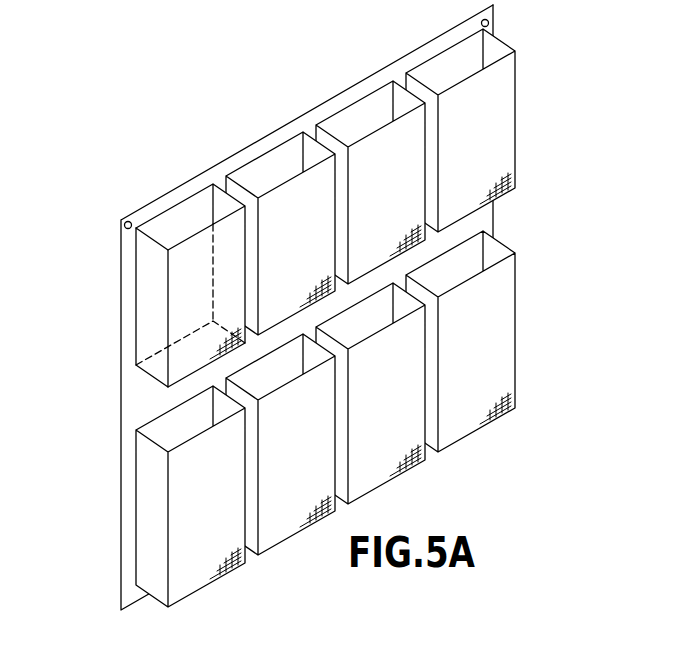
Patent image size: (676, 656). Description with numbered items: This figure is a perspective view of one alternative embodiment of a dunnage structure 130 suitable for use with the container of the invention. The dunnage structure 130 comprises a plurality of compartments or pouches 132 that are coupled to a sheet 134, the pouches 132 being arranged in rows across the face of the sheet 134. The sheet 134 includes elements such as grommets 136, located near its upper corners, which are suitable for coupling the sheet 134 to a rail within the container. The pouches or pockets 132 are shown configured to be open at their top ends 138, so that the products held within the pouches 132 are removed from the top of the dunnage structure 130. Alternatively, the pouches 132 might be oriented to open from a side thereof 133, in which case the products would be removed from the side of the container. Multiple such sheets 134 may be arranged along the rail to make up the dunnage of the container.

The dunnage structure 130 is at (183, 155).
The pouches 132 is at (197, 497).
The side 133 is at (152, 322).
The sheet 134 is at (482, 227).
The grommets 136 is at (490, 31).
The top ends 138 is at (283, 318).